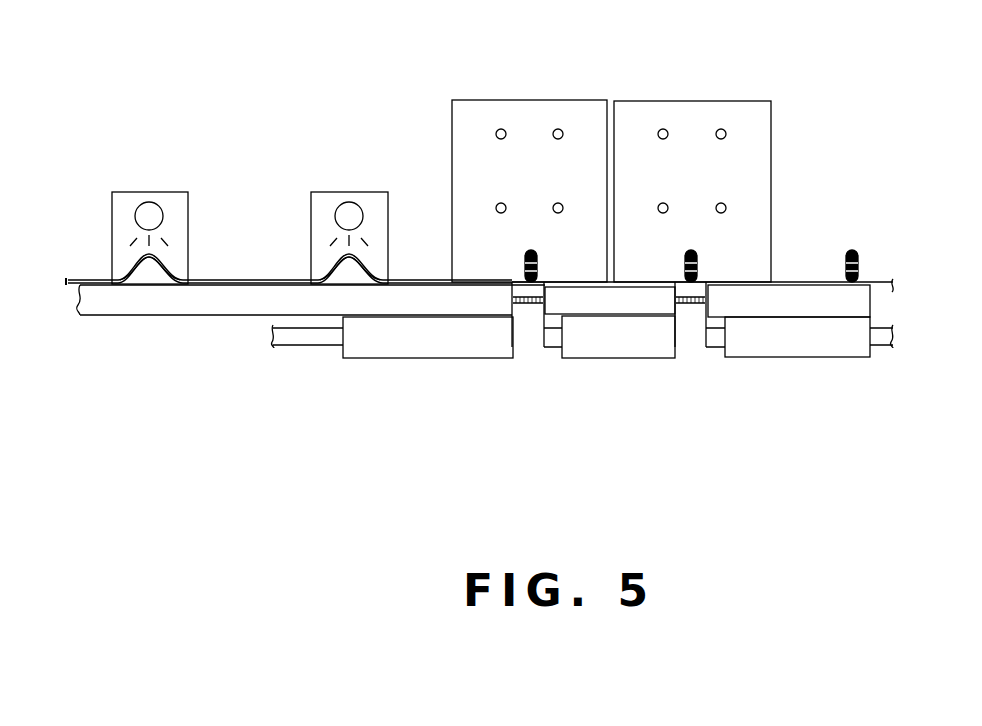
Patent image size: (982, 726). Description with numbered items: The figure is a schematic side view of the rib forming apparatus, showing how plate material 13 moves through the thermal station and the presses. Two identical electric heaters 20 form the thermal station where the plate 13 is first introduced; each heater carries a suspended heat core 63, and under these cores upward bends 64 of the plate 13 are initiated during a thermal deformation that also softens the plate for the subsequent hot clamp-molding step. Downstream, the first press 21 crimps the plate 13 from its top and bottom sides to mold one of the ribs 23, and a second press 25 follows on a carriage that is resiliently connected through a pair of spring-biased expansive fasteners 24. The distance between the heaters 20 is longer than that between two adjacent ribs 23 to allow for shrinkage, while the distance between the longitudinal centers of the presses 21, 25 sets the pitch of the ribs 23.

The plate material 13 is at (80, 281).
The electric heaters 20 is at (320, 188).
The first press 21 is at (493, 108).
The ribs 23 is at (852, 250).
The spring-biased expansive fasteners 24 is at (533, 307).
The second press 25 is at (671, 108).
The heat cores 63 is at (140, 202).
The upward bends 64 is at (330, 268).